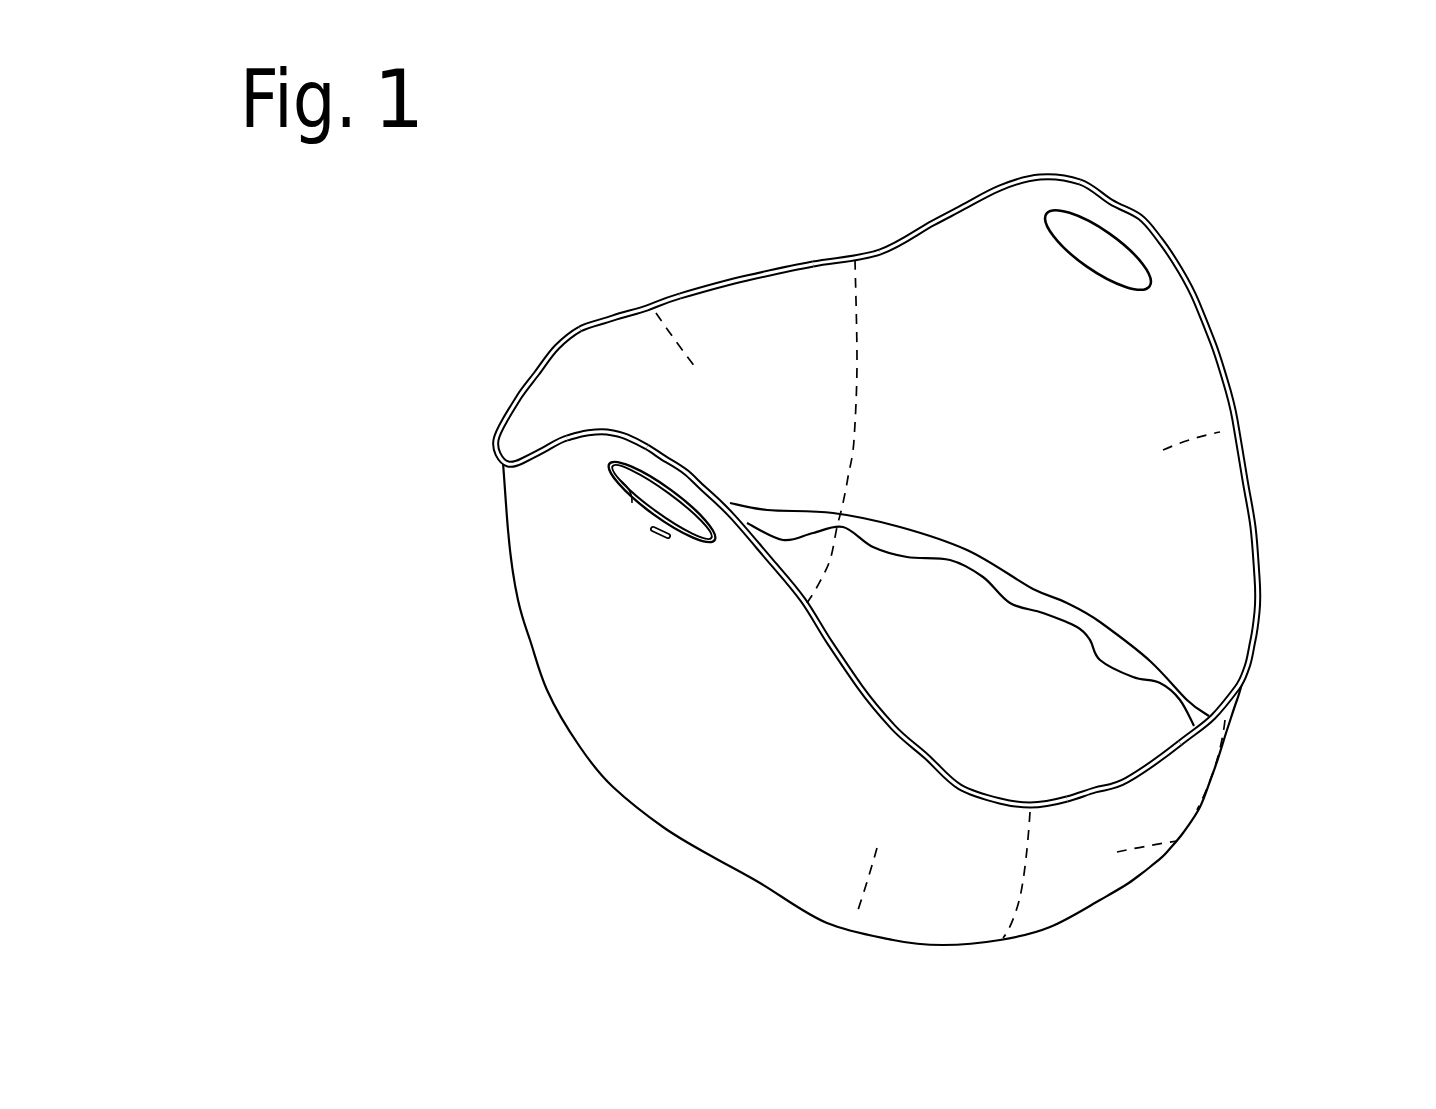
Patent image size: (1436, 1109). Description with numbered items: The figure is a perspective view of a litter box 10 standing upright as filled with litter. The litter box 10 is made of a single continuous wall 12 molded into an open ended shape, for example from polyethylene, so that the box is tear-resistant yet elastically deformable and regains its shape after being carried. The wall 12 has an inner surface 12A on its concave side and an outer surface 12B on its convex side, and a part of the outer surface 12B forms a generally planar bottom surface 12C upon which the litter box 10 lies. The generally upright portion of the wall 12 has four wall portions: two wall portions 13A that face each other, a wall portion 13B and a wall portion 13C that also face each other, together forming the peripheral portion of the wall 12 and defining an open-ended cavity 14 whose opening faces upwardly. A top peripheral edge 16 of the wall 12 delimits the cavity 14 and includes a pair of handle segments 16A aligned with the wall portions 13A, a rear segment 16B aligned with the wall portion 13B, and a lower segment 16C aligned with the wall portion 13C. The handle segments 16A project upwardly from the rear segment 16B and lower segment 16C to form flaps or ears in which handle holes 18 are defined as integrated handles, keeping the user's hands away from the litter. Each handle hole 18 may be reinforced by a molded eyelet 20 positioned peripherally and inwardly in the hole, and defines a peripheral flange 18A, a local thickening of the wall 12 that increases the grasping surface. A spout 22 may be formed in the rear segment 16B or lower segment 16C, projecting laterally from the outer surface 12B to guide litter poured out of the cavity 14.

The litter box 10 is at (497, 820).
The wall 12 is at (757, 330).
The inner surface 12A is at (805, 446).
The outer surface 12B is at (757, 793).
The bottom surface 12C is at (853, 922).
The wall portions 13A is at (1227, 424).
The wall portion 13B is at (657, 309).
The wall portion 13C is at (1180, 838).
The open-ended cavity 14 is at (962, 470).
The top peripheral edge 16 is at (835, 645).
The handle segments 16A is at (1093, 183).
The rear segment 16B is at (813, 260).
The lower segment 16C is at (1113, 780).
The handle holes 18 is at (1080, 232).
The peripheral flange 18A is at (1135, 289).
The eyelet 20 is at (1095, 267).
The spout 22 is at (573, 330).